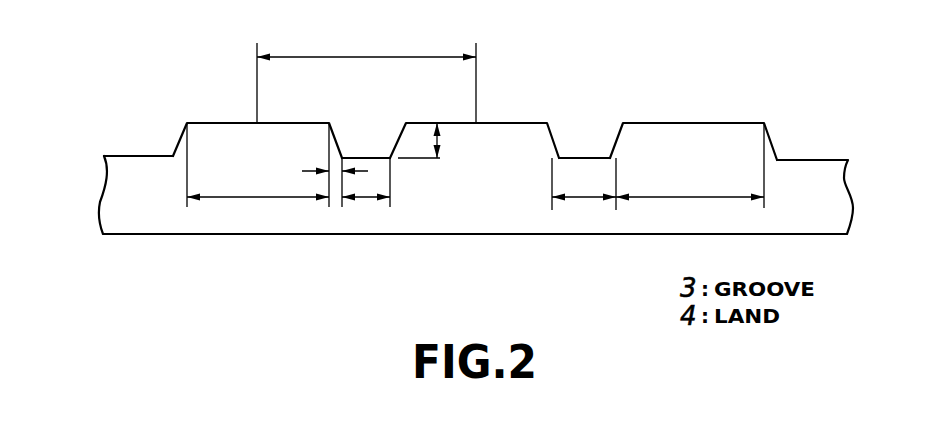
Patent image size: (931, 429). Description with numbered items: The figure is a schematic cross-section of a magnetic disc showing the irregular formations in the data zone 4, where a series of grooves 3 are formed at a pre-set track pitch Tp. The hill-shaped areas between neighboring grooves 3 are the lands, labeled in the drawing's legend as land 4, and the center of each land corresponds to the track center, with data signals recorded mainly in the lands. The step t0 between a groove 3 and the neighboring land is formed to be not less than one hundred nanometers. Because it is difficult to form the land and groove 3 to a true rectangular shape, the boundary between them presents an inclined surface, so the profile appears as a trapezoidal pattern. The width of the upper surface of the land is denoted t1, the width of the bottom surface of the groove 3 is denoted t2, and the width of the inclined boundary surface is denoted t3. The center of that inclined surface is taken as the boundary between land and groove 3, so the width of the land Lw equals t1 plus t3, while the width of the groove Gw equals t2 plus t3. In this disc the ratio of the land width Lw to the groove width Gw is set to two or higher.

The groove 3 is at (363, 158).
The data zone 4 is at (231, 123).
The track pitch Tp is at (366, 76).
The step between groove and land t0 is at (431, 140).
The width of the upper surface of the land t1 is at (258, 165).
The width of the bottom surface of the groove t2 is at (366, 191).
The width of the inclined surface t3 is at (323, 162).
The width of the groove Gw is at (584, 184).
The width of the land Lw is at (690, 165).